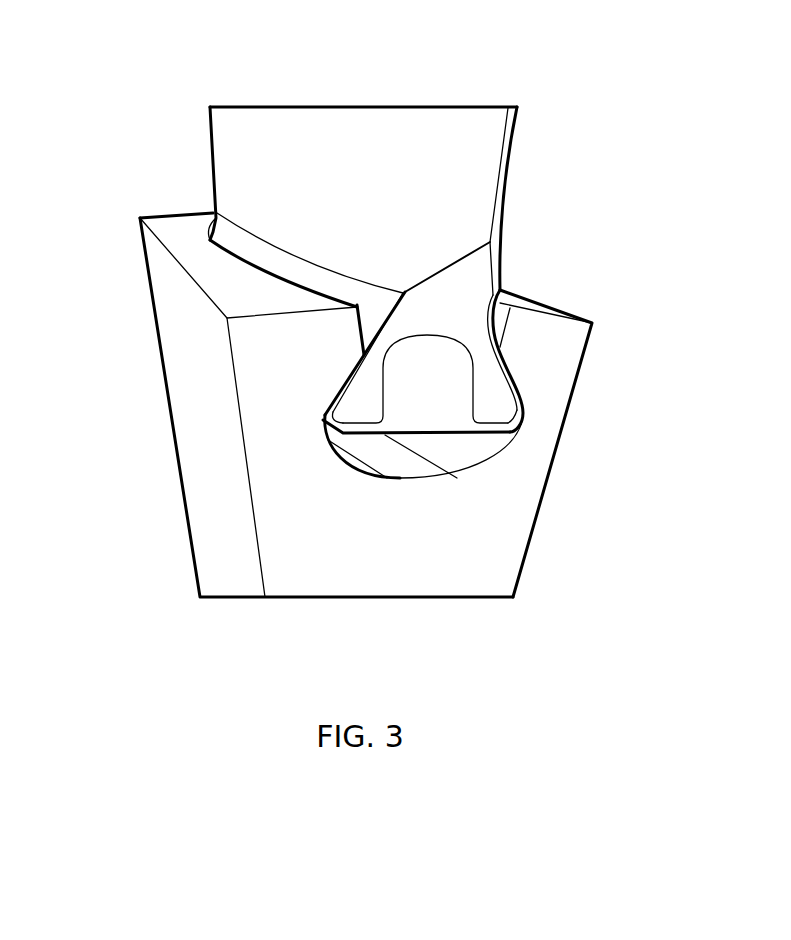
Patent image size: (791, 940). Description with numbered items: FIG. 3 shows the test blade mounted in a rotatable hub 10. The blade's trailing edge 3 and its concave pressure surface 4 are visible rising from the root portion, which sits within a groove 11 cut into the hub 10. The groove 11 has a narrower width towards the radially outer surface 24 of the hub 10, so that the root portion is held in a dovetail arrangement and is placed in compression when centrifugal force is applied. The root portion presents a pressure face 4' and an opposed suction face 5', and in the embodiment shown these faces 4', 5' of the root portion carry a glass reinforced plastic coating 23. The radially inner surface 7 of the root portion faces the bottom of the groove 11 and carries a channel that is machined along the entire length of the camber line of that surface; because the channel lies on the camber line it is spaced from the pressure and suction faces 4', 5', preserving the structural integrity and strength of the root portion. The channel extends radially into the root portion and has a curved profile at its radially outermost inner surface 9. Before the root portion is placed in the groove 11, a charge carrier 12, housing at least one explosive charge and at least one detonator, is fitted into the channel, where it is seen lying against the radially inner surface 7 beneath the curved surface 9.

The trailing edge 3 is at (488, 162).
The pressure surface 4 is at (362, 176).
The pressure face of the root portion 4' is at (349, 353).
The suction face of the root portion 5' is at (552, 353).
The radially inner surface 7 is at (490, 422).
The radially outermost inner surface 9 is at (432, 335).
The rotatable hub 10 is at (517, 508).
The groove 11 is at (372, 478).
The charge carrier 12 is at (460, 405).
The glass reinforced plastic coating 23 is at (405, 292).
The radially outer surface of the hub 24 is at (152, 270).